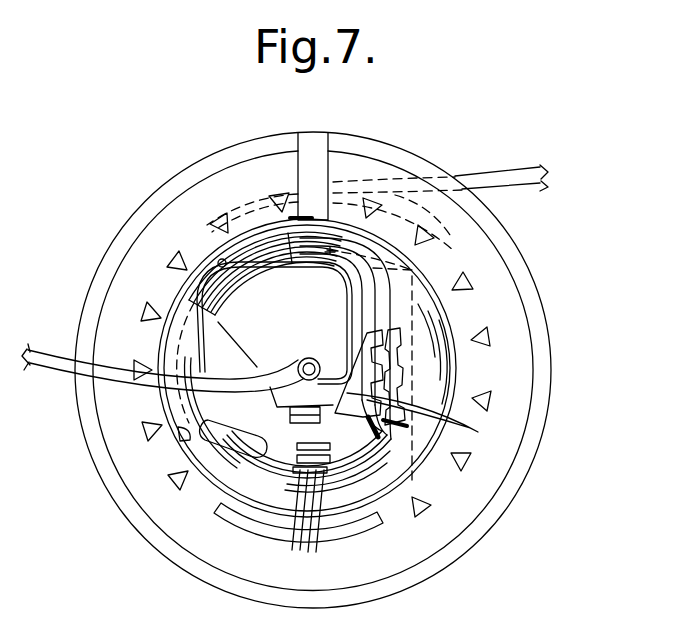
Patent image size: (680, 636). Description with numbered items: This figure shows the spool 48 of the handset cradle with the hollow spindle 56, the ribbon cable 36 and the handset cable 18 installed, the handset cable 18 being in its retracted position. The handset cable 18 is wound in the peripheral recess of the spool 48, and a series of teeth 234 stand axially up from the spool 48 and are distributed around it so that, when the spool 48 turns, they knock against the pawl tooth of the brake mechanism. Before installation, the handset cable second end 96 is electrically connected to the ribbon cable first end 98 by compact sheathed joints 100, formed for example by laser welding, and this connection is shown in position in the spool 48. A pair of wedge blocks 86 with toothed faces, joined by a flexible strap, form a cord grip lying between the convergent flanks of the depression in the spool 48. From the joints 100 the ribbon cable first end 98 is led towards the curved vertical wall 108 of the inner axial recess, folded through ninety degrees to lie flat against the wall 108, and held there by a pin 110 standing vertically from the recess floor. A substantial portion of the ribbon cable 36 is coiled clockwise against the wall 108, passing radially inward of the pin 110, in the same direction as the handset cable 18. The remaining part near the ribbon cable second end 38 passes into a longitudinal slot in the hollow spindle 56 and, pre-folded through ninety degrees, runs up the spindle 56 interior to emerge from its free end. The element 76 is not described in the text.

The spool 48 is at (182, 166).
The ribbon cable 36 is at (267, 301).
The post / cable entry 76 is at (318, 145).
The pin 110 is at (216, 262).
The handset cable 18 is at (496, 177).
The teeth 234 is at (432, 240).
The hollow spindle 56 is at (305, 357).
The ribbon cable second end 38 is at (54, 368).
The curved vertical wall 108 is at (184, 432).
The ribbon cable first end 98 is at (236, 437).
The wedge blocks 86 is at (422, 391).
The handset cable second end 96 is at (378, 422).
The sheathed joints 100 is at (298, 528).